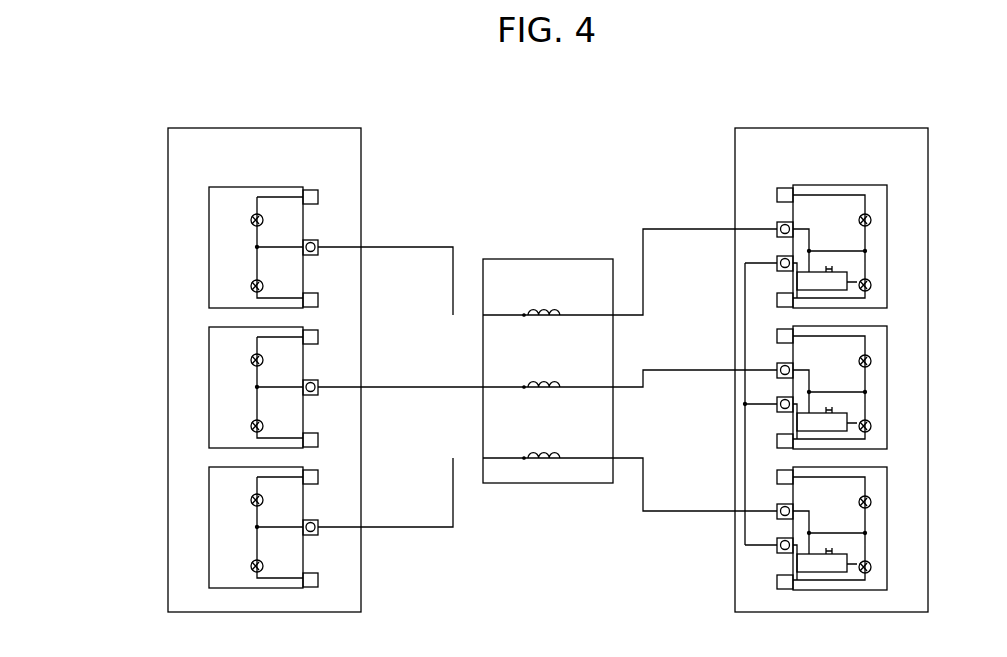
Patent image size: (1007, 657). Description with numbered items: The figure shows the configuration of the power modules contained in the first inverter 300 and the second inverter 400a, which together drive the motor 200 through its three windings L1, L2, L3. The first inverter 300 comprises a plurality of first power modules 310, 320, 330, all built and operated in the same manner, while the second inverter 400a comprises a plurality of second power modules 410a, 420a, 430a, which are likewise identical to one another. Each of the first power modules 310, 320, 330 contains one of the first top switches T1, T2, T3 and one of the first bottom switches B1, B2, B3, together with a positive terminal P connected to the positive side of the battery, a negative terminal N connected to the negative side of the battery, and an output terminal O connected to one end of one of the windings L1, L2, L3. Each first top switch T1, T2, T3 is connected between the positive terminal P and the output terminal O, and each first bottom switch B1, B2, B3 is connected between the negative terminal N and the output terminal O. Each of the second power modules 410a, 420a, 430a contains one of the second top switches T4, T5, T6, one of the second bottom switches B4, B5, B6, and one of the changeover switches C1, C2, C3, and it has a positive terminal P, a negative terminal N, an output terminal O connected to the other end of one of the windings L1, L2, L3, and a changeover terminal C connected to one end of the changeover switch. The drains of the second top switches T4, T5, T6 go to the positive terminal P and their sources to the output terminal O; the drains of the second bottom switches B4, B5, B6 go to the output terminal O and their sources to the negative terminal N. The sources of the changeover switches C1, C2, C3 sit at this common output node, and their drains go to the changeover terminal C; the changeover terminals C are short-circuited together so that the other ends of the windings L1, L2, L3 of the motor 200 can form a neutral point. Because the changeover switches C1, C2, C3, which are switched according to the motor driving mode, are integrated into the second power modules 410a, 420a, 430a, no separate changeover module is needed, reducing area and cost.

The motor 200 is at (546, 259).
The first inverter 300 is at (268, 128).
The second inverter 400a is at (836, 128).
The first power module 310 is at (222, 247).
The first power module 320 is at (222, 387).
The first power module 330 is at (222, 527).
The second power module 410a is at (876, 246).
The second power module 420a is at (876, 387).
The second power module 430a is at (876, 528).
The first top switch T1 is at (243, 220).
The first top switch T2 is at (243, 360).
The first top switch T3 is at (243, 500).
The second top switch T4 is at (858, 220).
The second top switch T5 is at (858, 361).
The second top switch T6 is at (858, 502).
The first bottom switch B1 is at (243, 286).
The first bottom switch B2 is at (243, 426).
The first bottom switch B3 is at (243, 566).
The second bottom switch B4 is at (872, 277).
The second bottom switch B5 is at (872, 418).
The second bottom switch B6 is at (872, 559).
The changeover switch C1 is at (822, 278).
The changeover switch C2 is at (822, 419).
The changeover switch C3 is at (822, 560).
The winding L1 is at (541, 322).
The winding L2 is at (541, 394).
The winding L3 is at (541, 448).